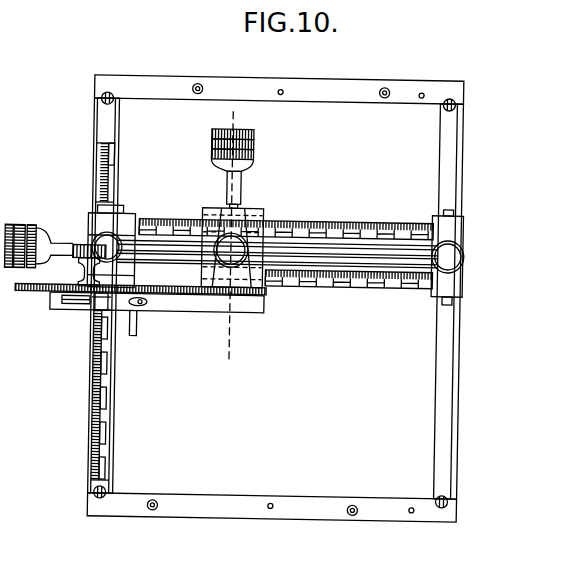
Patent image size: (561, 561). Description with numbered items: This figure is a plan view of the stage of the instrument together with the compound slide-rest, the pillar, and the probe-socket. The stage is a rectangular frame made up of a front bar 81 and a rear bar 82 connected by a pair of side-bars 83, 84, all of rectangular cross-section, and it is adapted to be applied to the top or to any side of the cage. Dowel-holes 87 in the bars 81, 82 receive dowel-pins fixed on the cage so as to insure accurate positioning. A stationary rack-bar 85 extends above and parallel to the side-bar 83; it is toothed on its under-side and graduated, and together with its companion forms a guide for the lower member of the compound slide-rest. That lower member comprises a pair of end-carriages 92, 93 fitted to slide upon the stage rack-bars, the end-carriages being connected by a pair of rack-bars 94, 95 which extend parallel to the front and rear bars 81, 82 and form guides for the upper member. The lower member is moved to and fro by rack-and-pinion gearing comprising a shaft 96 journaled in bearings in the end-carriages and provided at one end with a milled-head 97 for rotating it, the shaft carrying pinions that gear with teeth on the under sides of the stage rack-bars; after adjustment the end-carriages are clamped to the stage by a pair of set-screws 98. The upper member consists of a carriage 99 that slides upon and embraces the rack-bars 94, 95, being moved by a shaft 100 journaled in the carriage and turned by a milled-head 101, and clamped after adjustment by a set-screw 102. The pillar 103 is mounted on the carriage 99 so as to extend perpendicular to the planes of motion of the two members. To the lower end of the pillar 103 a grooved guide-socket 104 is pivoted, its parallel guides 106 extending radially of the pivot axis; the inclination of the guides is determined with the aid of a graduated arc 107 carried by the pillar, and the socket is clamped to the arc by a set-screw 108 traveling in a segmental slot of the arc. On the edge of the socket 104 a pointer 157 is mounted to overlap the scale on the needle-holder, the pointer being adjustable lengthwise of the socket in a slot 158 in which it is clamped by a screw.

The front bar 81 is at (163, 80).
The rear bar 82 is at (215, 505).
The side-bar 83 is at (93, 151).
The side-bar 84 is at (461, 165).
The rack-bar 85 is at (113, 422).
The dowel-holes 87 is at (195, 85).
The end-carriage 92 is at (120, 212).
The end-carriage 93 is at (459, 219).
The rack-bar 94 is at (386, 222).
The rack-bar 95 is at (322, 287).
The shaft 96 is at (400, 263).
The milled-head 97 is at (20, 228).
The set-screws 98 is at (100, 242).
The carriage 99 is at (250, 226).
The shaft 100 is at (242, 207).
The milled-head 101 is at (252, 131).
The set-screw 102 is at (233, 290).
The pillar 103 is at (265, 297).
The guide-socket 104 is at (176, 307).
The parallel guides 106 is at (63, 315).
The graduated arc 107 is at (35, 297).
The set-screw 108 is at (80, 274).
The pointer 157 is at (133, 342).
The slot 158 is at (98, 315).